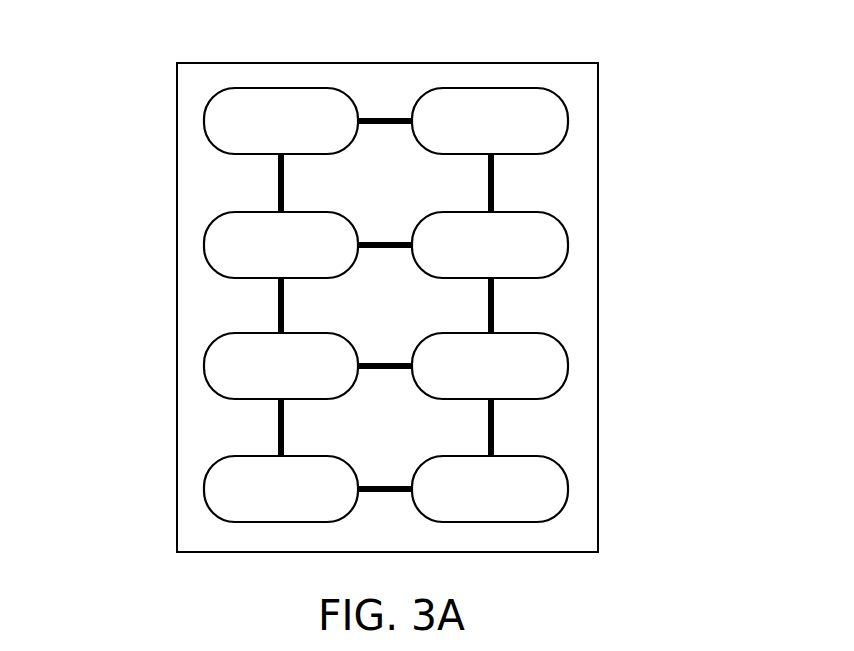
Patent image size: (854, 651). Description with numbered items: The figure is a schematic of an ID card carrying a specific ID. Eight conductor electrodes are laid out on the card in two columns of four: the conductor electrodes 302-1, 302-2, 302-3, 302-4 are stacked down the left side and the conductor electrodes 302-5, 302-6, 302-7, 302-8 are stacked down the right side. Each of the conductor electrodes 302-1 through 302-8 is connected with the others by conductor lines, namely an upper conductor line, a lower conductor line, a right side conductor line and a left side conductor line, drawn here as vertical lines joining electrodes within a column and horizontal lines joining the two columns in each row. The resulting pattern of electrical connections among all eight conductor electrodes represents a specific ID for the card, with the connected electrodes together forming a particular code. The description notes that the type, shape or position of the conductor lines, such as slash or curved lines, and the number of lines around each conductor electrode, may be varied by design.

The conductor electrode 302-1 is at (220, 113).
The conductor electrode 302-2 is at (220, 246).
The conductor electrode 302-3 is at (232, 371).
The conductor electrode 302-4 is at (232, 506).
The conductor electrode 302-5 is at (558, 108).
The conductor electrode 302-6 is at (556, 249).
The conductor electrode 302-7 is at (560, 369).
The conductor electrode 302-8 is at (560, 501).